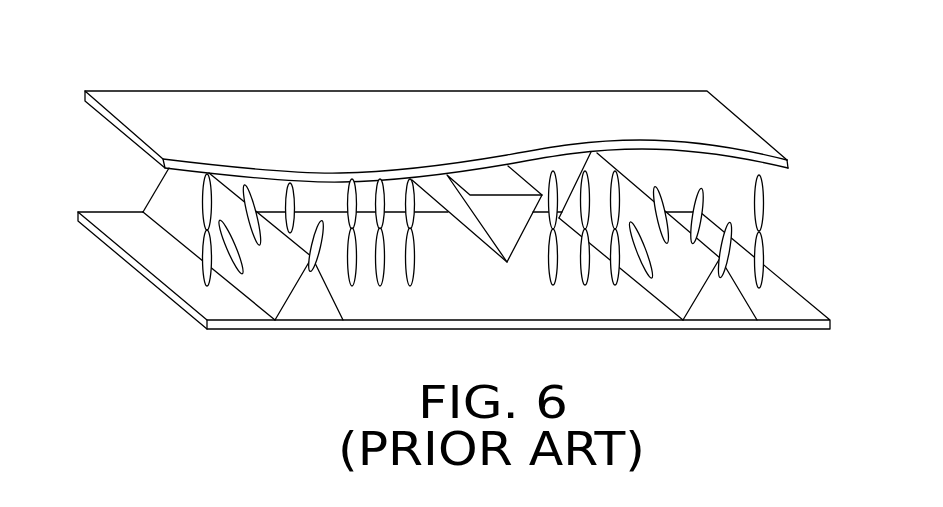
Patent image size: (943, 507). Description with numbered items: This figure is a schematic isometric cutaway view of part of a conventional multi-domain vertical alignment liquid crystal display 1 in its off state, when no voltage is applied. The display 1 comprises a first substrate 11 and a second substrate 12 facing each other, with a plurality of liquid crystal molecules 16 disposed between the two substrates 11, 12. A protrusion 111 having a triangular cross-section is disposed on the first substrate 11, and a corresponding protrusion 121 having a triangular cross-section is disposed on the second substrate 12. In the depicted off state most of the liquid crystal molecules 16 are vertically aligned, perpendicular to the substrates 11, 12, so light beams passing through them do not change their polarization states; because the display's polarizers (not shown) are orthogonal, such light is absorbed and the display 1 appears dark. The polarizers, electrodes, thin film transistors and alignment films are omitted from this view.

The MVA liquid crystal display 1 is at (75, 86).
The first substrate 11 is at (765, 161).
The protrusion 111 is at (503, 208).
The second substrate 12 is at (805, 327).
The protrusion 121 is at (720, 302).
The liquid crystal molecules 16 is at (758, 246).